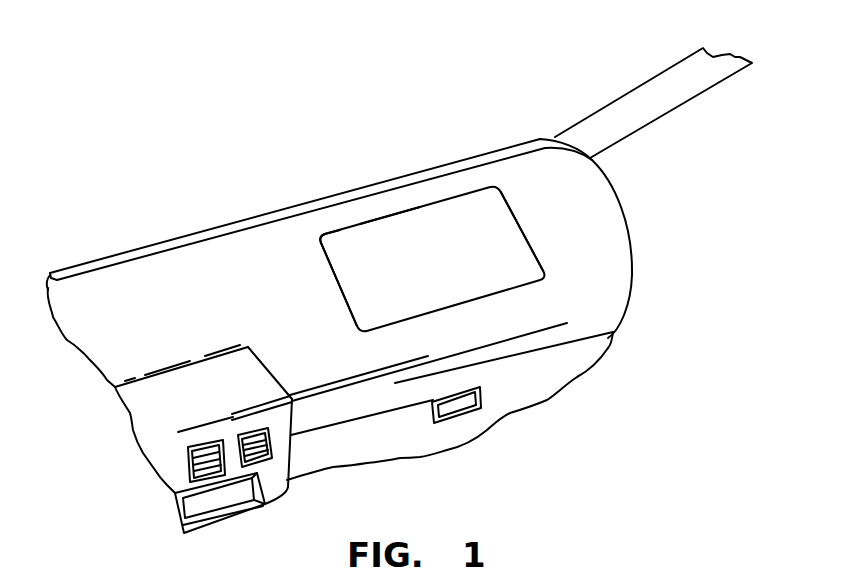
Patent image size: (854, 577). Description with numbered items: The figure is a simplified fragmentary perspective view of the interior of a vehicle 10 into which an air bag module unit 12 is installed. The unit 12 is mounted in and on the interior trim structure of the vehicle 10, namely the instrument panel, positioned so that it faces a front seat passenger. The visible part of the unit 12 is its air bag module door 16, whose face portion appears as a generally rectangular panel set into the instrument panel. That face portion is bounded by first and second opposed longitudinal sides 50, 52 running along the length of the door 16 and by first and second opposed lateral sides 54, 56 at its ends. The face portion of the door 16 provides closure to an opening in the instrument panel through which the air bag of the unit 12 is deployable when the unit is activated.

The vehicle 10 is at (409, 74).
The air bag module unit 12 is at (445, 220).
The air bag module door 16 is at (330, 248).
The first longitudinal side 50 is at (503, 297).
The second longitudinal side 52 is at (385, 213).
The first lateral side 54 is at (333, 272).
The second lateral side 56 is at (528, 229).